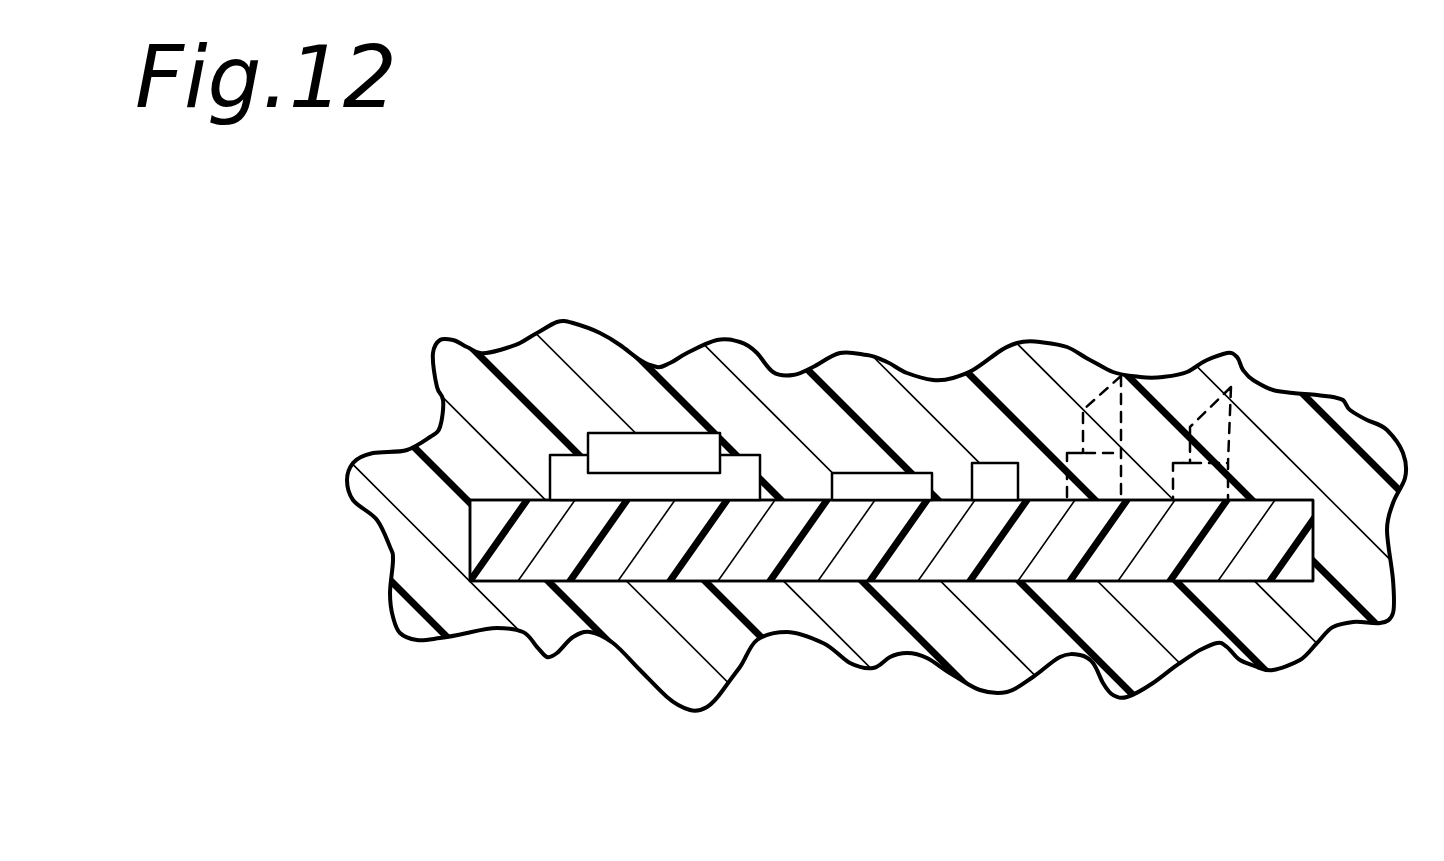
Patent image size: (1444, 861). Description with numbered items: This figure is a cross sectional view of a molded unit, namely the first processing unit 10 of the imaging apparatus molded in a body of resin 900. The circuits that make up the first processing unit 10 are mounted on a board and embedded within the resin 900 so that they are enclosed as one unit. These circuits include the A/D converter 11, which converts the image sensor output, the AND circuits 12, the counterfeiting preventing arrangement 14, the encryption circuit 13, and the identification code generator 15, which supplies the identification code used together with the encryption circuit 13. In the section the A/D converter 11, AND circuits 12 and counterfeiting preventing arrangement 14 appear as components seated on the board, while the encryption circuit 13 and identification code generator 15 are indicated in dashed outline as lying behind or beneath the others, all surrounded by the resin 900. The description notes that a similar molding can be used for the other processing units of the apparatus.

The first processing unit 10 is at (1345, 356).
The resin 900 is at (468, 617).
The A/D converter 11 is at (646, 433).
The AND circuits 12 is at (858, 473).
The counterfeiting preventing arrangement 14 is at (997, 463).
The encryption circuit 13 is at (1121, 376).
The identification code generator 15 is at (1231, 387).